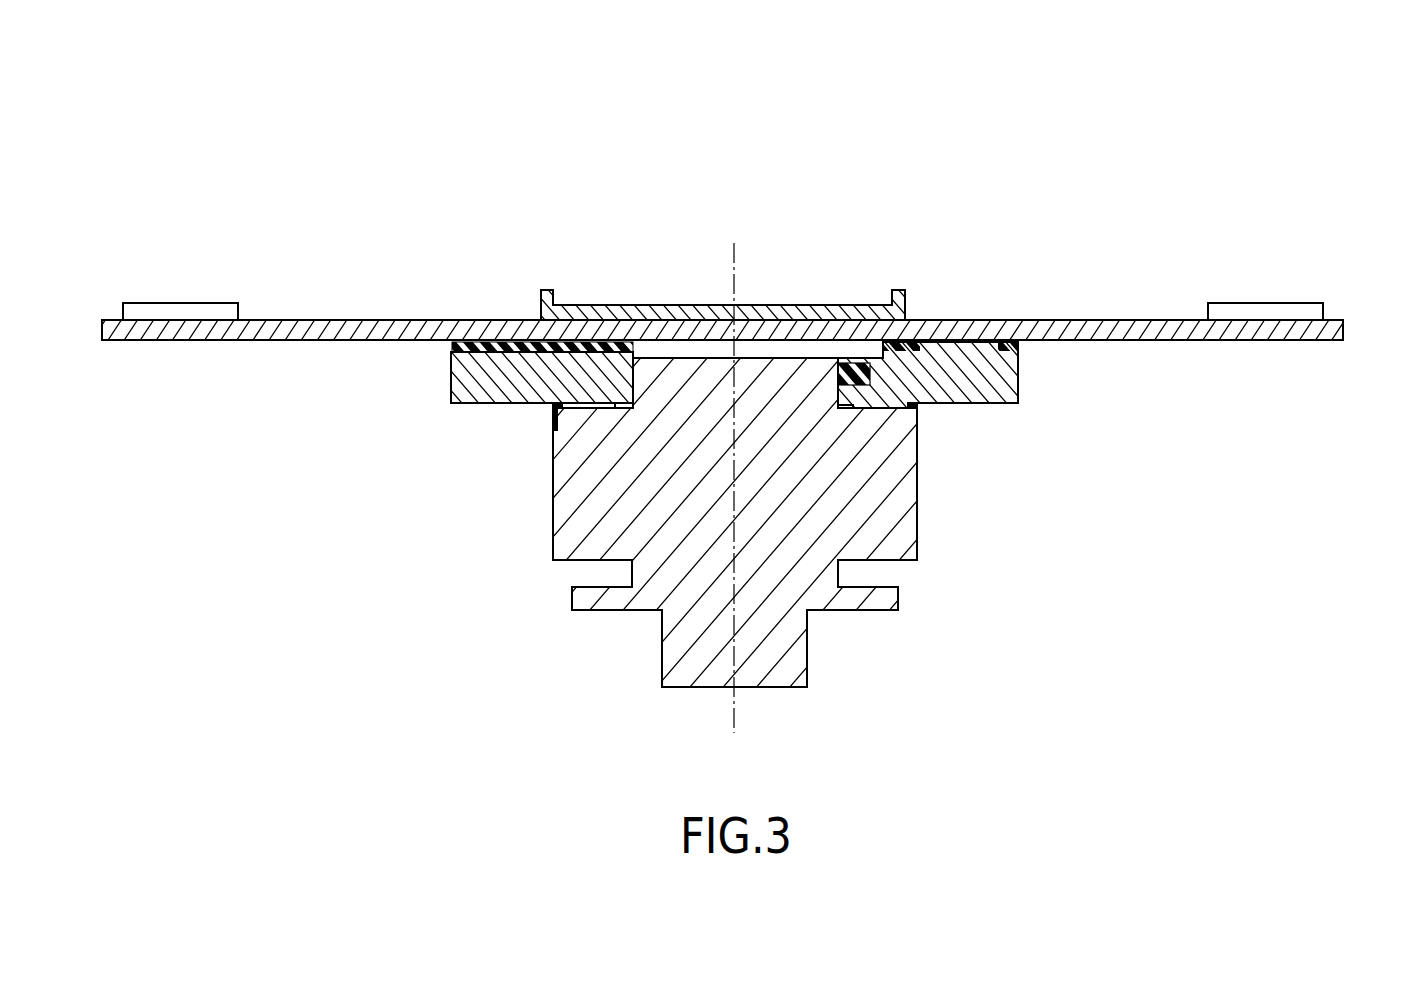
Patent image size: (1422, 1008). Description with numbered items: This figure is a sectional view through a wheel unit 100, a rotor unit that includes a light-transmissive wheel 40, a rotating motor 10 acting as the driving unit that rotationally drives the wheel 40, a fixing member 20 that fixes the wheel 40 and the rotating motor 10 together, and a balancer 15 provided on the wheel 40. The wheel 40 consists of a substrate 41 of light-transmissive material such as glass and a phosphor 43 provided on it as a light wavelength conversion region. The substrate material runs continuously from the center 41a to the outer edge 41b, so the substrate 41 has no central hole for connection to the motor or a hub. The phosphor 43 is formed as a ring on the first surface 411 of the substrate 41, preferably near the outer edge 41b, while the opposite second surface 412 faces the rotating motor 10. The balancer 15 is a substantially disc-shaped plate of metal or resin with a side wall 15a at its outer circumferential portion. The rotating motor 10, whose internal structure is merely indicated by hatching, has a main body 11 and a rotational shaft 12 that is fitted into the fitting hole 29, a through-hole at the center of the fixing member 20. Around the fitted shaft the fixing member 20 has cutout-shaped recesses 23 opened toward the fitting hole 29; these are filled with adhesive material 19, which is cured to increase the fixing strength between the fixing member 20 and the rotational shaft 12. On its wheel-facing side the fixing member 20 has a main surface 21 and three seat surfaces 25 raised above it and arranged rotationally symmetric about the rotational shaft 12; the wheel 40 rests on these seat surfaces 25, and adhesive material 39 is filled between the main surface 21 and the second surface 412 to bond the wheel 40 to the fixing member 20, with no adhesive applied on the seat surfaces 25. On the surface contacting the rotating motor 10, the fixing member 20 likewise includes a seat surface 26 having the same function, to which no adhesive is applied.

The wheel unit 100 is at (739, 398).
The wheel 40 is at (739, 294).
The substrate 41 is at (757, 331).
The center 41a is at (736, 322).
The outer edge 41b is at (102, 320).
The phosphor 43 is at (1265, 308).
The first surface 411 is at (1147, 320).
The second surface 412 is at (1147, 342).
The balancer 15 is at (736, 262).
The side wall 15a is at (896, 290).
The rotating motor 10 is at (732, 471).
The main body 11 is at (903, 495).
The rotational shaft 12 is at (817, 374).
The adhesive material 19 is at (855, 365).
The fixing member 20 is at (516, 345).
The main surface 21 is at (508, 345).
The recesses 23 is at (863, 350).
The seat surfaces 25 is at (921, 325).
The seat surface 26 is at (553, 432).
The fitting hole 29 is at (637, 378).
The adhesive material 39 is at (453, 346).